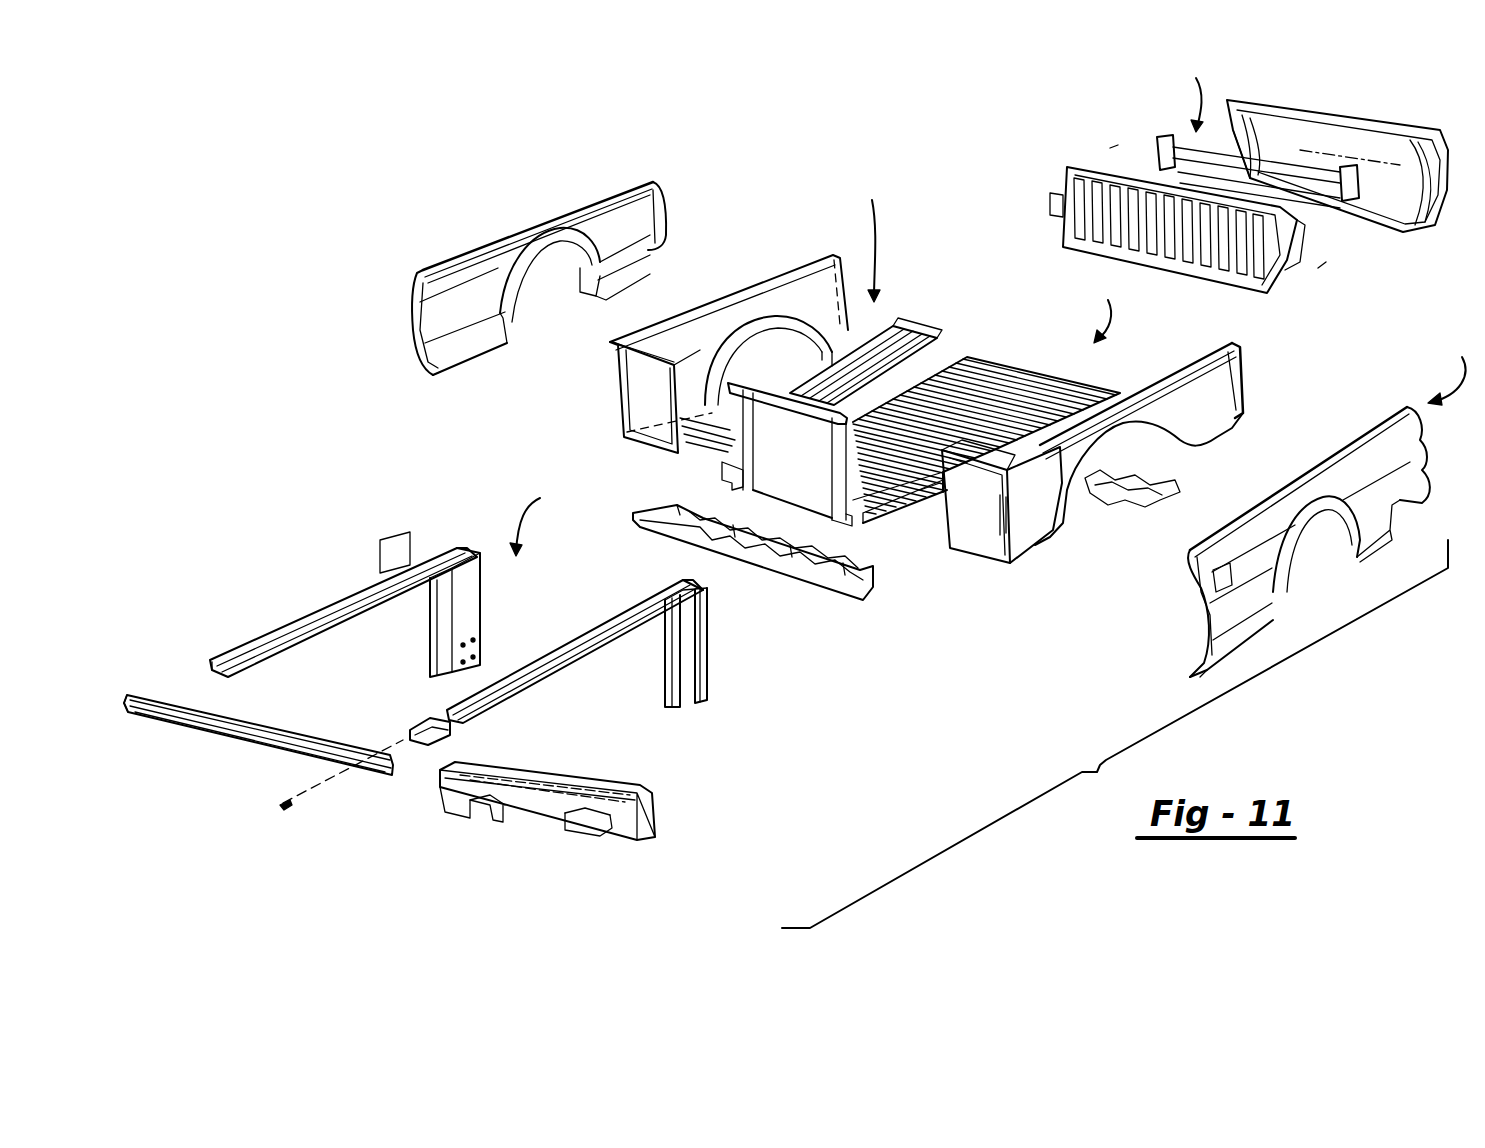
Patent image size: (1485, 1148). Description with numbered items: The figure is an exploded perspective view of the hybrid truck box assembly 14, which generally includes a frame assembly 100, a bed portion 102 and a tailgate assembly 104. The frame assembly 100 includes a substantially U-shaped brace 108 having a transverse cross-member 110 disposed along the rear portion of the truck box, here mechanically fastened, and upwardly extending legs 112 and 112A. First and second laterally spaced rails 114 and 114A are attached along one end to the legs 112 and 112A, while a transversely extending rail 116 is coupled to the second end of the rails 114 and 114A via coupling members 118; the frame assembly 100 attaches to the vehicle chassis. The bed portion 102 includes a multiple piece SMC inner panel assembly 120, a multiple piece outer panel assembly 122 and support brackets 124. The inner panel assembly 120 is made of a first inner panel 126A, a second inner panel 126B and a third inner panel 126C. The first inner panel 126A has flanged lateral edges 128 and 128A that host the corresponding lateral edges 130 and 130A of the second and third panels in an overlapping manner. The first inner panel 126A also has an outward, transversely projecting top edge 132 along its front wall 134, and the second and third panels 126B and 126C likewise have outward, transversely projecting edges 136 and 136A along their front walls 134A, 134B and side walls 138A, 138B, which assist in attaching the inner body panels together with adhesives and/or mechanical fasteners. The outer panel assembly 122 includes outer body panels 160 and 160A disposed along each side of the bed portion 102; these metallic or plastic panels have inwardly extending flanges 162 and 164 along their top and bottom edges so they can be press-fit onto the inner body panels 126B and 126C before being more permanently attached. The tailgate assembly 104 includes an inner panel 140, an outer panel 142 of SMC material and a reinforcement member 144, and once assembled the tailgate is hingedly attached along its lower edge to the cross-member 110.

The truck box assembly 14 is at (1115, 734).
The frame assembly 100 is at (546, 523).
The bed portion 102 is at (921, 385).
The tailgate assembly 104 is at (1251, 171).
The U-shaped brace 108 is at (633, 787).
The transverse cross-member 110 is at (548, 776).
The upwardly extending leg 112 is at (700, 663).
The upwardly extending leg 112A is at (473, 600).
The first laterally spaced rail 114 is at (600, 650).
The second laterally spaced rail 114A is at (335, 607).
The transversely extending rail 116 is at (250, 723).
The coupling member 118 is at (423, 727).
The inner panel assembly 120 is at (1104, 310).
The outer panel assembly 122 is at (1333, 506).
The support bracket 124 is at (840, 600).
The first inner panel 126A is at (1093, 398).
The second inner panel 126B is at (1193, 417).
The third inner panel 126C is at (893, 323).
The flanged lateral edge 128 is at (900, 510).
The flanged lateral edge 128A is at (963, 357).
The lateral edge 130 is at (947, 523).
The lateral edge 130A is at (923, 350).
The top edge 132 is at (800, 370).
The front wall 134 is at (793, 470).
The front wall 134A is at (978, 533).
The front wall 134B is at (645, 390).
The transversely projecting edge 136 is at (1198, 427).
The transversely projecting edge 136A is at (790, 268).
The side wall 138A is at (1193, 417).
The side wall 138B is at (693, 340).
The inner panel 140 is at (1070, 177).
The outer panel 142 is at (1385, 122).
The reinforcement member 144 is at (1323, 183).
The outer body panel 160 is at (1415, 480).
The outer body panel 160A is at (416, 293).
The inwardly extending flange 162 is at (480, 257).
The inwardly extending flange 164 is at (488, 352).